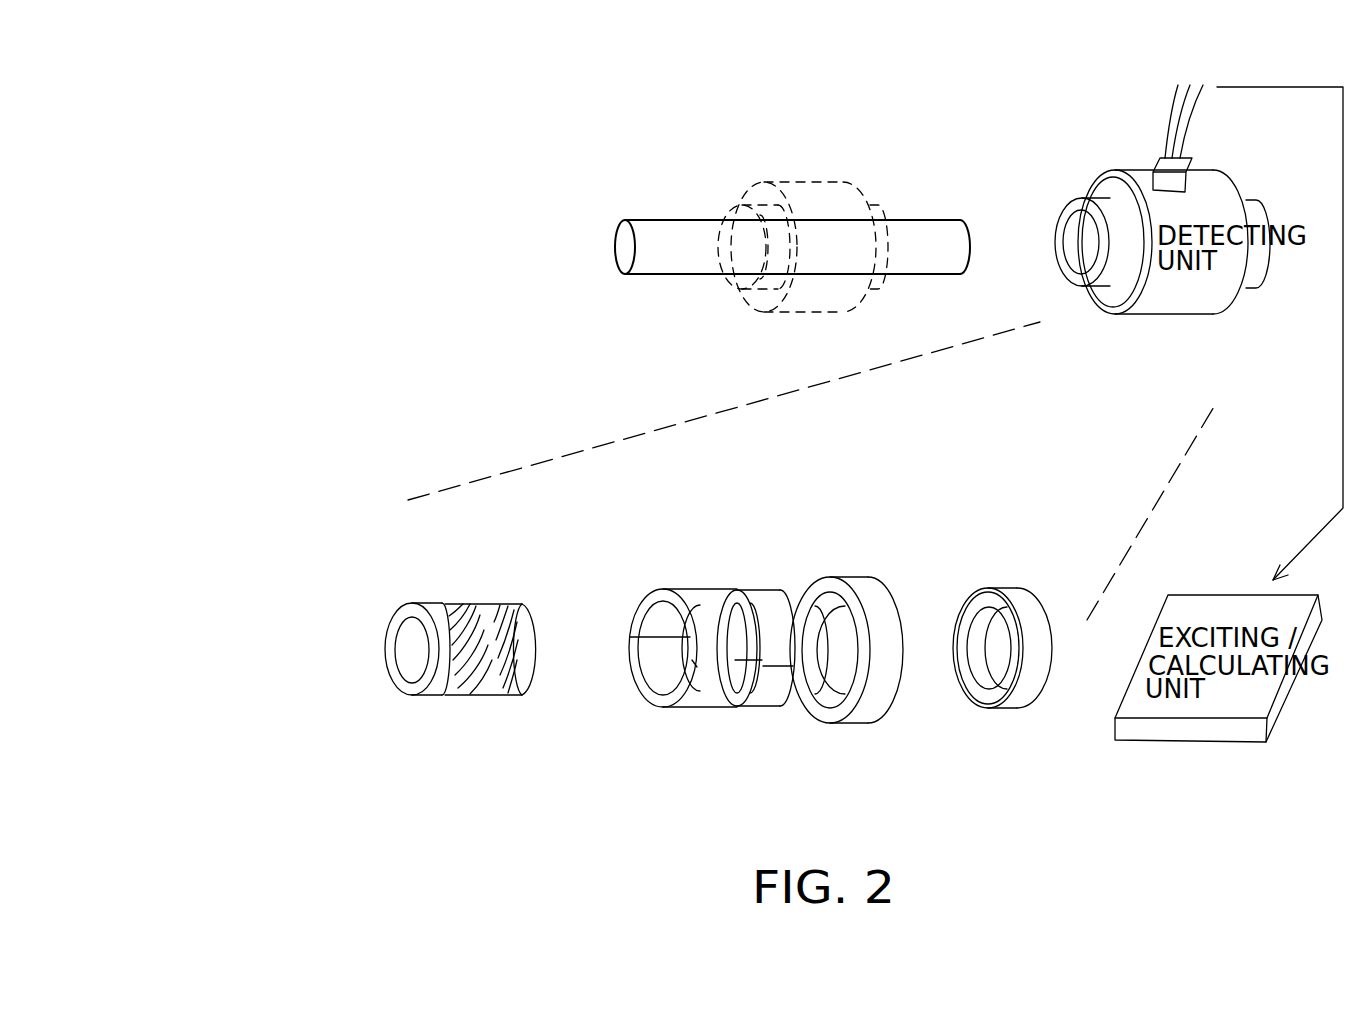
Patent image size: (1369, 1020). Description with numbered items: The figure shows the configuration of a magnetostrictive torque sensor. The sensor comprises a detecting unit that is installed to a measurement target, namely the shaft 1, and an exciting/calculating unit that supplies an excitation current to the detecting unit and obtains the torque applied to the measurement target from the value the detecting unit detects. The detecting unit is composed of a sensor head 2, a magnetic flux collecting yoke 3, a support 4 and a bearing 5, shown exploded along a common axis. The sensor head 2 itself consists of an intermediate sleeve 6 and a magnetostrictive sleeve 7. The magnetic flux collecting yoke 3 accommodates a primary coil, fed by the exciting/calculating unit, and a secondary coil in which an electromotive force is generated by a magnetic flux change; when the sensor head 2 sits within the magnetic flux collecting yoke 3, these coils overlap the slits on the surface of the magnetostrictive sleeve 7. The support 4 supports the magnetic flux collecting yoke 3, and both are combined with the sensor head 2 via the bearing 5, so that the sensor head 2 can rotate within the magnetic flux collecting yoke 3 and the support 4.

The shaft 1 is at (652, 218).
The sensor head 2 is at (412, 580).
The magnetic flux collecting yoke 3 is at (684, 590).
The support 4 is at (864, 578).
The bearing 5 is at (1015, 588).
The intermediate sleeve 6 is at (517, 697).
The magnetostrictive sleeve 7 is at (445, 696).